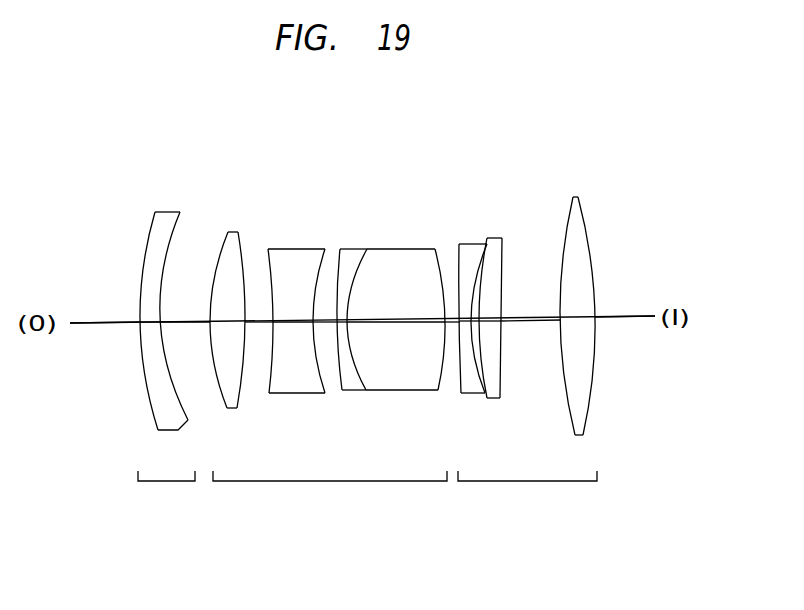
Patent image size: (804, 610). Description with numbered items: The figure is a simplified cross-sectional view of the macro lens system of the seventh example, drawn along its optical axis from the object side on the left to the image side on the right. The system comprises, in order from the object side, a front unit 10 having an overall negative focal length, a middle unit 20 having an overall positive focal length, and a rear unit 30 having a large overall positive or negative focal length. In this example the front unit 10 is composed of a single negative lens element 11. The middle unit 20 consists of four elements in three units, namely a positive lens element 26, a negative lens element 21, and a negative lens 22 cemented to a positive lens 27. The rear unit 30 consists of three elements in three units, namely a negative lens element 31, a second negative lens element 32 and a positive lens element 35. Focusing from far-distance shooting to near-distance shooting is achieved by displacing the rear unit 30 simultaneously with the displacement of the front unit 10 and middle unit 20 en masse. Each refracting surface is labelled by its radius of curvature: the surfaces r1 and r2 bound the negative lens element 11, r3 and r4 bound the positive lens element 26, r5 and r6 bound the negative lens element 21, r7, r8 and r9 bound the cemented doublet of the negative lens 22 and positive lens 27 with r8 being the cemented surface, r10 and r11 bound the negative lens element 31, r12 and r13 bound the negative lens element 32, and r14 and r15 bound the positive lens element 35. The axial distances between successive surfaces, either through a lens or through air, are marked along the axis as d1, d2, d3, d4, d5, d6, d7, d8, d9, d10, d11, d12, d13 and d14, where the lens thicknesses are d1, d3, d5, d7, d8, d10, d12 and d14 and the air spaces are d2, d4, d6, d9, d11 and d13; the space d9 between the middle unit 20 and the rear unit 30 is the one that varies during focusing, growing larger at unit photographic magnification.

The front unit 10 is at (162, 504).
The middle unit 20 is at (330, 504).
The rear unit 30 is at (527, 501).
The negative lens element 11 is at (161, 319).
The positive lens element 26 is at (224, 309).
The negative lens element 21 is at (291, 312).
The negative lens 22 is at (353, 310).
The positive lens 27 is at (405, 318).
The negative lens element 31 is at (467, 311).
The negative lens element 32 is at (511, 307).
The positive lens element 35 is at (575, 306).
The radius of curvature of lens plane 1 r1 is at (155, 212).
The radius of curvature of lens plane 2 r2 is at (180, 212).
The radius of curvature of lens plane 3 r3 is at (228, 232).
The radius of curvature of lens plane 4 r4 is at (238, 232).
The radius of curvature of lens plane 5 r5 is at (268, 249).
The radius of curvature of lens plane 6 r6 is at (325, 249).
The radius of curvature of lens plane 7 r7 is at (340, 249).
The radius of curvature of lens plane 8 r8 is at (367, 249).
The radius of curvature of lens plane 9 r9 is at (435, 249).
The radius of curvature of lens plane 10 r10 is at (459, 244).
The radius of curvature of lens plane 11 r11 is at (487, 244).
The radius of curvature of lens plane 12 r12 is at (487, 238).
The radius of curvature of lens plane 13 r13 is at (502, 238).
The radius of curvature of lens plane 14 r14 is at (573, 197).
The radius of curvature of lens plane 15 r15 is at (578, 197).
The distance between plane 1 and plane 2 d1 is at (141, 318).
The distance between plane 2 and plane 3 d2 is at (186, 322).
The distance between plane 3 and plane 4 d3 is at (224, 318).
The distance between plane 4 and plane 5 d4 is at (261, 322).
The distance between plane 5 and plane 6 d5 is at (293, 321).
The distance between plane 6 and plane 7 d6 is at (325, 323).
The distance between plane 7 and plane 8 d7 is at (349, 324).
The distance between plane 8 and plane 9 d8 is at (393, 320).
The distance between plane 9 and plane 10 d9 is at (448, 323).
The distance between plane 10 and plane 11 d10 is at (476, 328).
The distance between plane 11 and plane 12 d11 is at (470, 318).
The distance between plane 12 and plane 13 d12 is at (496, 318).
The distance between plane 13 and plane 14 d13 is at (530, 322).
The distance between plane 14 and plane 15 d14 is at (588, 316).